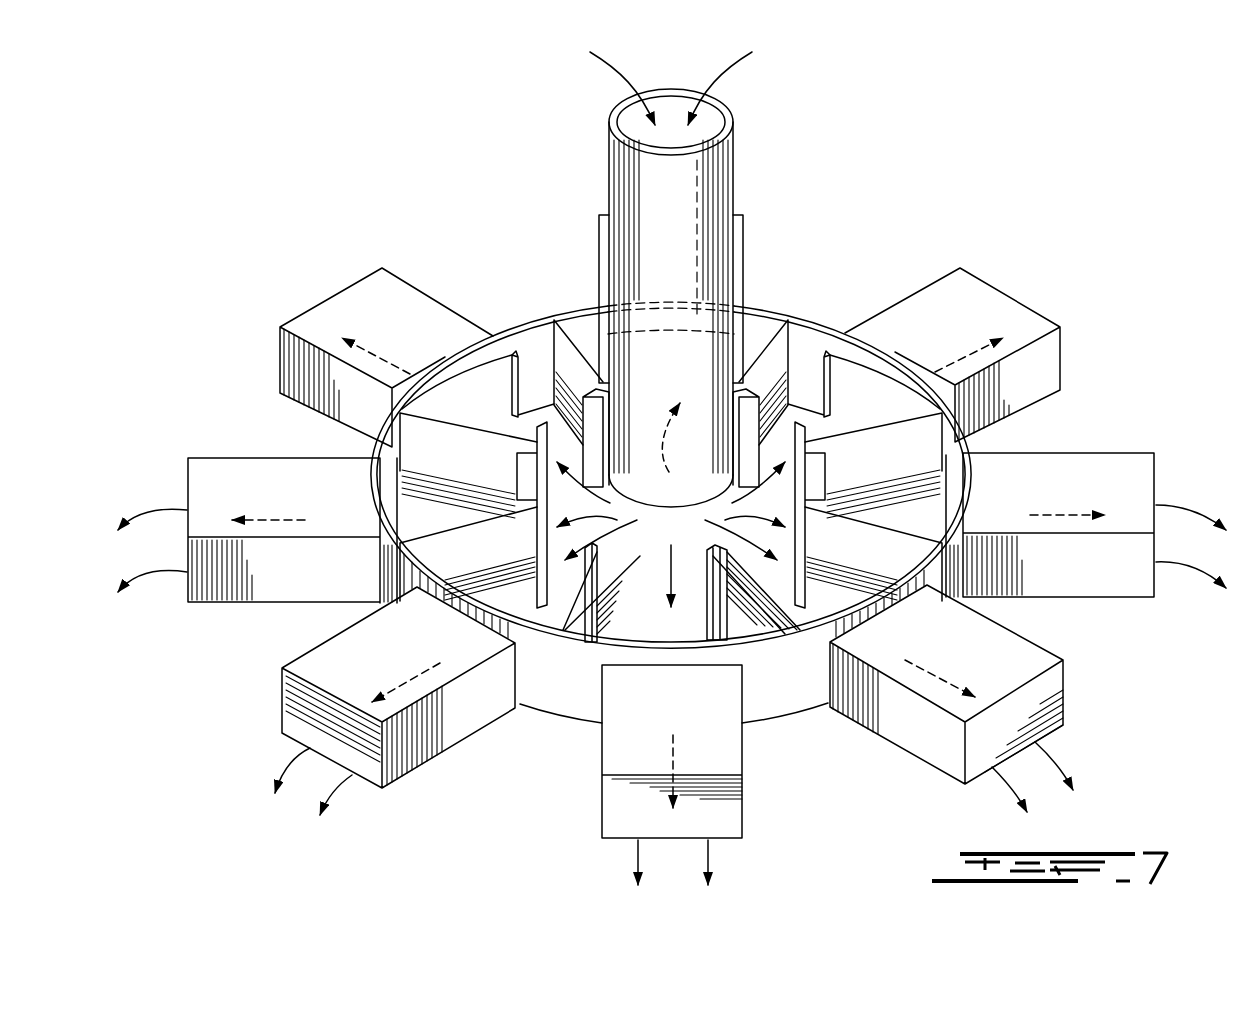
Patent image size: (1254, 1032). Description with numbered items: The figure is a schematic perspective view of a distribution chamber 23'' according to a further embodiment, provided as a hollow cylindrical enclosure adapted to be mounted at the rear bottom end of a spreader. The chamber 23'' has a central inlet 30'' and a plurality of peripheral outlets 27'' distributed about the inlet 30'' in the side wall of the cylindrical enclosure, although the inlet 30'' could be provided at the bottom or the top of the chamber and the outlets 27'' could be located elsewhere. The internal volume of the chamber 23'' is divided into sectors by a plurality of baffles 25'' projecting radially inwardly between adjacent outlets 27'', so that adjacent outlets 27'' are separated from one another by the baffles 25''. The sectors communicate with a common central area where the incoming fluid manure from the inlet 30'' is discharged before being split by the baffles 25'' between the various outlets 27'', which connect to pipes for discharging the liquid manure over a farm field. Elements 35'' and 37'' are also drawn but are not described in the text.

The distribution chamber 23'' is at (686, 405).
The central inlet 30'' is at (637, 279).
The peripheral outlets 27'' is at (672, 576).
The baffles 25'' is at (679, 464).
The front channel plates 35'' is at (681, 637).
The flow distribution region 37'' is at (724, 505).